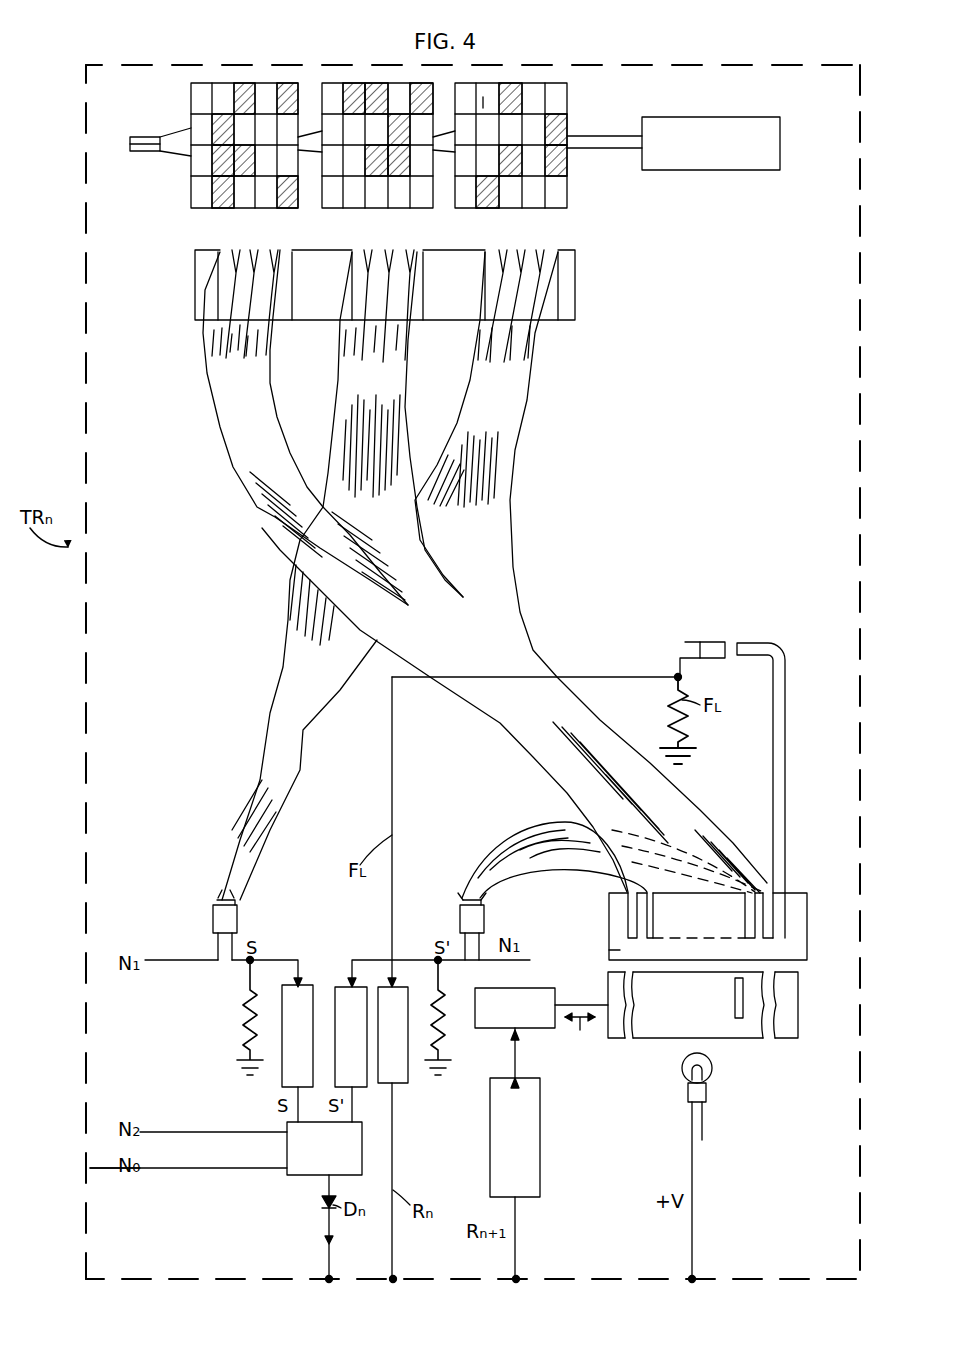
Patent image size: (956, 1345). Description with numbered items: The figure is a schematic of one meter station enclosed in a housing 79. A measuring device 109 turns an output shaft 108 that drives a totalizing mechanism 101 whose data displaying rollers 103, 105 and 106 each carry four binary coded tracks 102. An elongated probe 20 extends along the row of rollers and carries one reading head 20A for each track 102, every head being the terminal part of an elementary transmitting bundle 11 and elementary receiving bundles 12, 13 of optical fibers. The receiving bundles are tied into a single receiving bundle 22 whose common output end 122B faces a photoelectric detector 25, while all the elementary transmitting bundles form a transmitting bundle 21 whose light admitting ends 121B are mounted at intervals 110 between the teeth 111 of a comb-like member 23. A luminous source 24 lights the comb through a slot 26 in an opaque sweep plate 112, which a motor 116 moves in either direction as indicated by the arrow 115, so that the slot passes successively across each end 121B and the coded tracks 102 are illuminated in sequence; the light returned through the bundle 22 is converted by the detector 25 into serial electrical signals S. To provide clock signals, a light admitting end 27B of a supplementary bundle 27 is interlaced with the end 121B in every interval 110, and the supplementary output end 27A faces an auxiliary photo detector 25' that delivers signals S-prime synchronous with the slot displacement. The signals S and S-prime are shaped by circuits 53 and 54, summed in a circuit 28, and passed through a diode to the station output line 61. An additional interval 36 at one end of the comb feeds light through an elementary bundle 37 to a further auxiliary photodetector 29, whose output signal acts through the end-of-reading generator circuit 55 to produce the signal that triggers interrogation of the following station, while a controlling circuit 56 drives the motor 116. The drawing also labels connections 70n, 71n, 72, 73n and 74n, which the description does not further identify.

The housing 79 is at (86, 462).
The totalizing mechanism 101 is at (318, 88).
The binary coded tracks 102 is at (530, 93).
The data displaying roller 103 is at (557, 195).
The data displaying roller 105 is at (273, 190).
The code matrix 106 is at (418, 195).
The output shaft 108 is at (603, 148).
The measuring device 109 is at (757, 168).
The elongated probe 20 is at (577, 270).
The reading head 20A is at (245, 250).
The elementary transmitting bundle 11 is at (512, 275).
The elementary receiving bundle 12 is at (480, 309).
The elementary receiving bundle 13 is at (558, 309).
The transmitting bundle 21 is at (497, 603).
The receiving bundle 22 is at (290, 710).
The comb-like member 23 is at (615, 950).
The luminous source 24 is at (712, 1070).
The photoelectric detector 25 is at (247, 930).
The auxiliary photo detector 25' is at (451, 930).
The slot 26 is at (737, 985).
The supplementary bundle 27 is at (525, 855).
The supplementary output end 27A is at (460, 898).
The light admitting end 27B is at (645, 926).
The summing circuit 28 is at (287, 1150).
The auxiliary photodetector 29 is at (713, 641).
The additional interval 36 is at (780, 905).
The elementary bundle 37 is at (785, 712).
The shaping circuit 53 is at (282, 1070).
The shaping circuit 54 is at (362, 1077).
The Rn generator circuit 55 is at (400, 1072).
The controlling circuit 56 is at (541, 1095).
The output line 61 is at (326, 1278).
The supply terminal 70n is at (694, 1278).
The diode branch 71n is at (322, 1185).
The input line 72 is at (90, 1168).
The output terminal 73n is at (396, 1278).
The input terminal 74n is at (518, 1278).
The interval 110 is at (630, 940).
The teeth 111 is at (650, 910).
The sweep plate 112 is at (670, 1035).
The arrow 115 is at (581, 1032).
The motor 116 is at (535, 988).
The light admitting ends 121B is at (628, 915).
The output end 122B is at (216, 905).